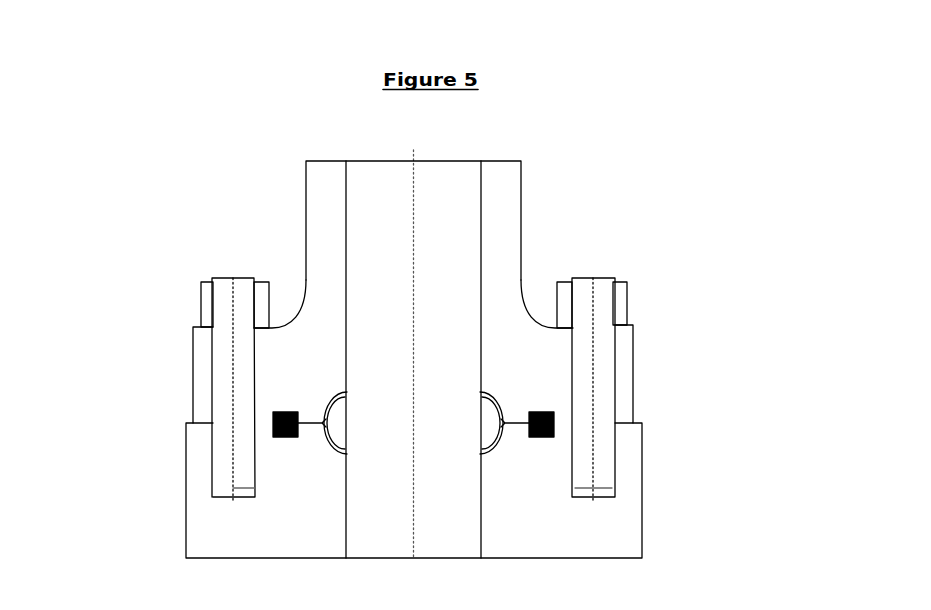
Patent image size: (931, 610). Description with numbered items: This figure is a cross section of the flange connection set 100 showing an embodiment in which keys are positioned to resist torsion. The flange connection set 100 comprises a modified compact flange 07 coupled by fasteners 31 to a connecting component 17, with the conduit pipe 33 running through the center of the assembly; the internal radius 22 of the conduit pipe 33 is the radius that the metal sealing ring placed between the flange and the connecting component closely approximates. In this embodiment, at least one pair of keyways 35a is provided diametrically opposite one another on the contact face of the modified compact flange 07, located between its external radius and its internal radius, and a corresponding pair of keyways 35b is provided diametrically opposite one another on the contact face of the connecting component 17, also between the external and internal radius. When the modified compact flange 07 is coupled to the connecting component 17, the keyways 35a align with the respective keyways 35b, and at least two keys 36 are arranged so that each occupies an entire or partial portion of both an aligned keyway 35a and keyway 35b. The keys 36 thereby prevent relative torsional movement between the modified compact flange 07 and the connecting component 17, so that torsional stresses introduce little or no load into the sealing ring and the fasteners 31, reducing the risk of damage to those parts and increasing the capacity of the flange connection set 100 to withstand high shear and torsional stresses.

The flange connection set 100 is at (622, 205).
The conduit pipe 33 is at (515, 168).
The internal radius 22 is at (348, 175).
The modified compact flange 07 is at (515, 285).
The fasteners 31 is at (590, 375).
The connecting component 17 is at (637, 545).
The keys 36 is at (273, 417).
The keyways 35a is at (290, 413).
The keyways 35b is at (288, 442).